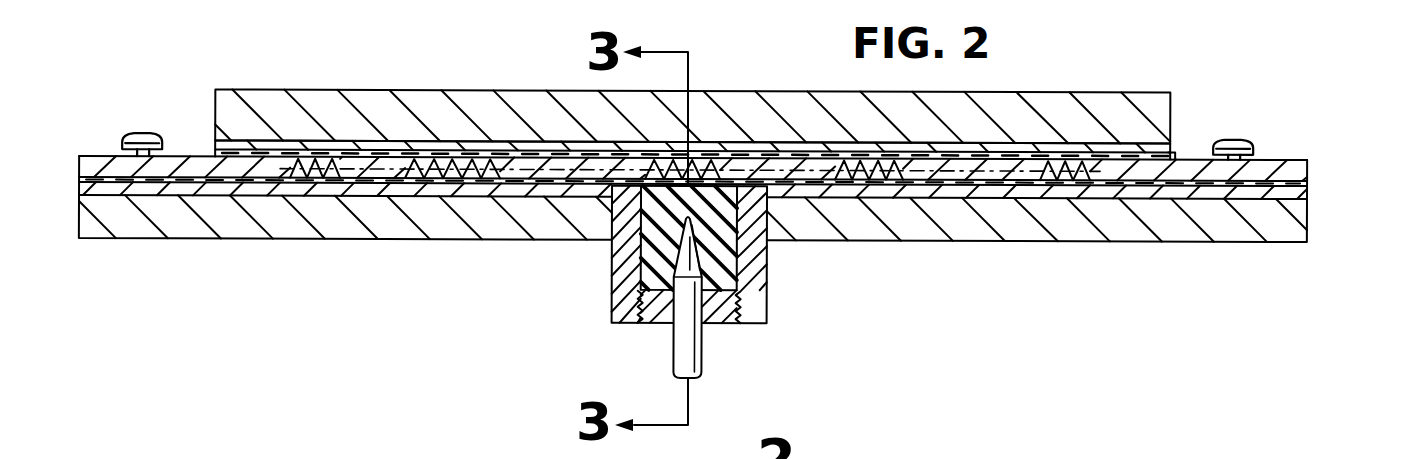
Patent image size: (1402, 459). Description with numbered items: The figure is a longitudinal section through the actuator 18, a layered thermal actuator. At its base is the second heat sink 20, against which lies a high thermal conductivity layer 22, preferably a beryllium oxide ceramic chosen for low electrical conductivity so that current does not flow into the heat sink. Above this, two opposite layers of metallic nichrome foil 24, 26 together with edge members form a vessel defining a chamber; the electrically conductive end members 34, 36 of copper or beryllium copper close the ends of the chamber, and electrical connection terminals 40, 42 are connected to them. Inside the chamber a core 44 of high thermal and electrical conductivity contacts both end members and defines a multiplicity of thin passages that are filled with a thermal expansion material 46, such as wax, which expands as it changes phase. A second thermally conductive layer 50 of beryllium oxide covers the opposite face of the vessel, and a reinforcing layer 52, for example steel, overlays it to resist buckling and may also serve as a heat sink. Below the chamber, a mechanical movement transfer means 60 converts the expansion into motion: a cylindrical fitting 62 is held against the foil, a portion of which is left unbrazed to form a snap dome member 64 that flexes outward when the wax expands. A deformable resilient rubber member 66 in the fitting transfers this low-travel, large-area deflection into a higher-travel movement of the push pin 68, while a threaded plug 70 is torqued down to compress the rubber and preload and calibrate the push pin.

The actuator 18 is at (1078, 86).
The second heat sink 20 is at (1287, 233).
The high thermal conductivity layer 22 is at (1303, 192).
The metallic foil layer 24 is at (1303, 185).
The metallic foil layer 26 is at (1172, 156).
The end member 34 is at (100, 169).
The end member 36 is at (1263, 170).
The electrical connection terminal 40 is at (153, 136).
The electrical connection terminal 42 is at (1228, 137).
The core 44 is at (343, 173).
The thermal expansion material 46 is at (1088, 186).
The second thermally conductive layer 50 is at (215, 152).
The reinforcing layer 52 is at (390, 101).
The mechanical movement transfer means 60 is at (604, 249).
The cylindrical fitting 62 is at (748, 282).
The dome member 64 is at (748, 258).
The deformable resilient member 66 is at (748, 302).
The push pin 68 is at (683, 352).
The threaded plug 70 is at (657, 321).